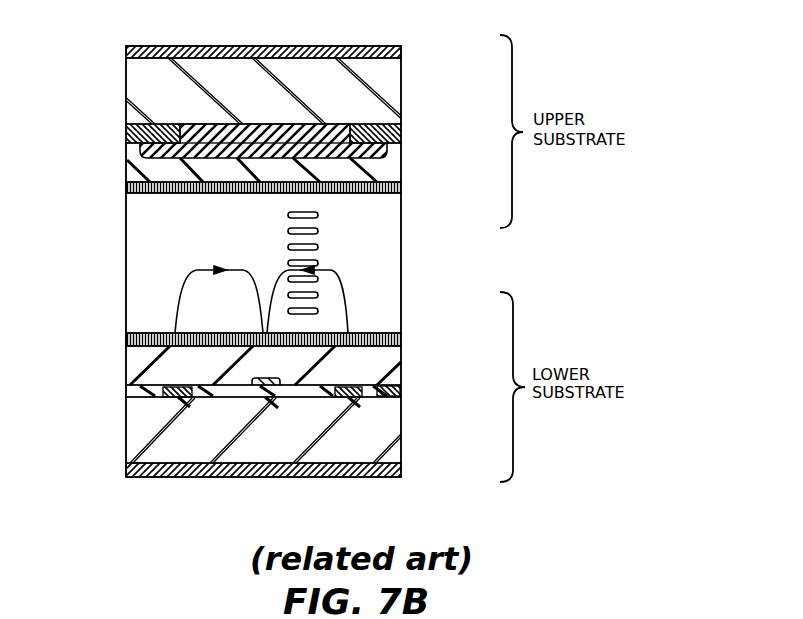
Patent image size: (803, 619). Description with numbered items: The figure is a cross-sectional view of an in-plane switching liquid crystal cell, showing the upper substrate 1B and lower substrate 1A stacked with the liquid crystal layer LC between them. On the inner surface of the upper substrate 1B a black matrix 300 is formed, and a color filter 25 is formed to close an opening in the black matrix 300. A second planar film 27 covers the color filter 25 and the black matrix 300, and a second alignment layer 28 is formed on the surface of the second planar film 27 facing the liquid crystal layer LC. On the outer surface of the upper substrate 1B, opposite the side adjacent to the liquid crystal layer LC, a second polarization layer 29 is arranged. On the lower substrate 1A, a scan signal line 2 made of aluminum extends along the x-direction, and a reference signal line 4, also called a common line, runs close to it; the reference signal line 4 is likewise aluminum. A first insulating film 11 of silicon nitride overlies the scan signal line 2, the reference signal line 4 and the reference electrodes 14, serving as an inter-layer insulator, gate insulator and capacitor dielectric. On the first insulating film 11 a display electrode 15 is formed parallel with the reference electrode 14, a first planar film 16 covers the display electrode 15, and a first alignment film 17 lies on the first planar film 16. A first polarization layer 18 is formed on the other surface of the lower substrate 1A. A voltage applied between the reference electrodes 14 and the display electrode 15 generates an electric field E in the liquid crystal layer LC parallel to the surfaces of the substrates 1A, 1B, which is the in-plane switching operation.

The second polarization layer 29 is at (152, 46).
The color filter 25 is at (333, 128).
The black matrix 300 is at (126, 135).
The upper substrate 1B is at (396, 82).
The second planar film 27 is at (396, 168).
The second alignment layer 28 is at (398, 200).
The liquid crystal layer LC is at (396, 250).
The electric field E is at (312, 270).
The first alignment film 17 is at (396, 325).
The first planar film 16 is at (396, 357).
The scan signal line 2 is at (396, 392).
The first insulating film 11 is at (137, 390).
The reference signal line 4 is at (176, 397).
The display electrode 15 is at (282, 397).
The reference electrode 14 is at (347, 397).
The lower substrate 1A is at (396, 437).
The first polarization layer 18 is at (384, 476).